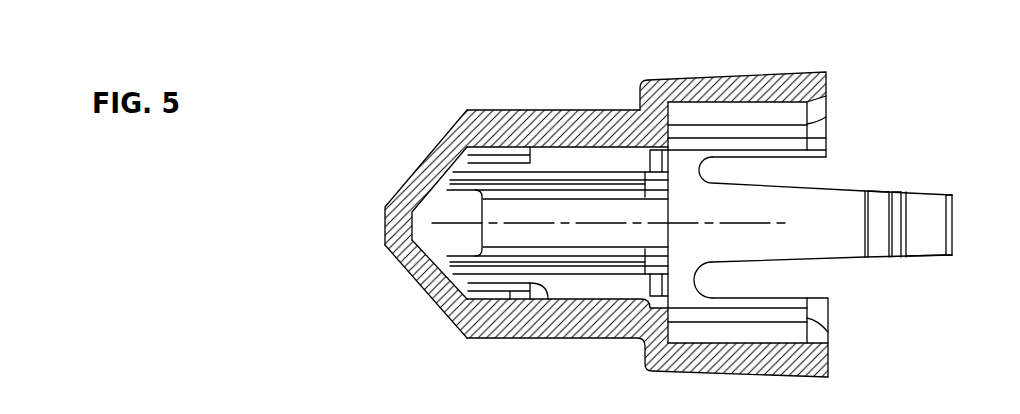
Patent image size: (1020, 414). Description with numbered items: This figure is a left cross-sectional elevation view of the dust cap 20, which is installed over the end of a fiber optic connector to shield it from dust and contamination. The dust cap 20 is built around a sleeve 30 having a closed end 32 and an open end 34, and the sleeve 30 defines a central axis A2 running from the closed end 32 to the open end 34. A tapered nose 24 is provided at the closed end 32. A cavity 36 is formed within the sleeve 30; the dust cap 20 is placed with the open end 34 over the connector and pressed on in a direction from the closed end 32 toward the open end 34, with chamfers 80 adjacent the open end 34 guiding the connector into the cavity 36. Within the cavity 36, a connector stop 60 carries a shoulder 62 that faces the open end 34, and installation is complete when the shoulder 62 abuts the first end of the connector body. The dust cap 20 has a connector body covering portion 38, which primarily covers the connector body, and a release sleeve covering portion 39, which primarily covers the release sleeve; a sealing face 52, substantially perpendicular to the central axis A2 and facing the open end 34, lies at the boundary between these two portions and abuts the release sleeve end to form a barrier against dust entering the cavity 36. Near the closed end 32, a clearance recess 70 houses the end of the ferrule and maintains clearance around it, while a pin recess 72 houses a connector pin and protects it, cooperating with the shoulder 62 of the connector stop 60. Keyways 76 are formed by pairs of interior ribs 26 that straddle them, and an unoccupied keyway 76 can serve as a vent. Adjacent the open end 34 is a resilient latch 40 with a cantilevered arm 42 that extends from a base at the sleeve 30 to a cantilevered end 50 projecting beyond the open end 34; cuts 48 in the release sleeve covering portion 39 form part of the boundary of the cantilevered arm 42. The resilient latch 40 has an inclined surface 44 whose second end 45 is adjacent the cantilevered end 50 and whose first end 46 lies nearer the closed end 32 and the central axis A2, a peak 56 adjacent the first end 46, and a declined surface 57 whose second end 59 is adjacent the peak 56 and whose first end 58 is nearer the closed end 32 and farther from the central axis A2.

The dust cap 20 is at (968, 112).
The tapered nose 24 is at (442, 300).
The interior ribs 26 is at (618, 178).
The sleeve 30 is at (538, 108).
The closed end 32 is at (408, 192).
The open end 34 is at (822, 318).
The cavity 36 is at (577, 158).
The connector body covering portion 38 is at (503, 108).
The release sleeve covering portion 39 is at (755, 74).
The resilient latch 40 is at (927, 228).
The cantilevered arm 42 is at (834, 205).
The inclined surface 44 is at (922, 247).
The second end 45 is at (952, 203).
The first end 46 is at (904, 210).
The cuts 48 is at (720, 288).
The cantilevered end 50 is at (953, 242).
The sealing face 52 is at (672, 112).
The peak 56 is at (897, 247).
The declined surface 57 is at (880, 203).
The first end 58 is at (863, 247).
The second end 59 is at (888, 247).
The connector stop 60 is at (513, 299).
The shoulder 62 is at (548, 300).
The clearance recess 70 is at (492, 236).
The pin recess 72 is at (477, 165).
The keyways 76 is at (617, 238).
The chamfers 80 is at (820, 112).
The central axis A2 is at (752, 223).